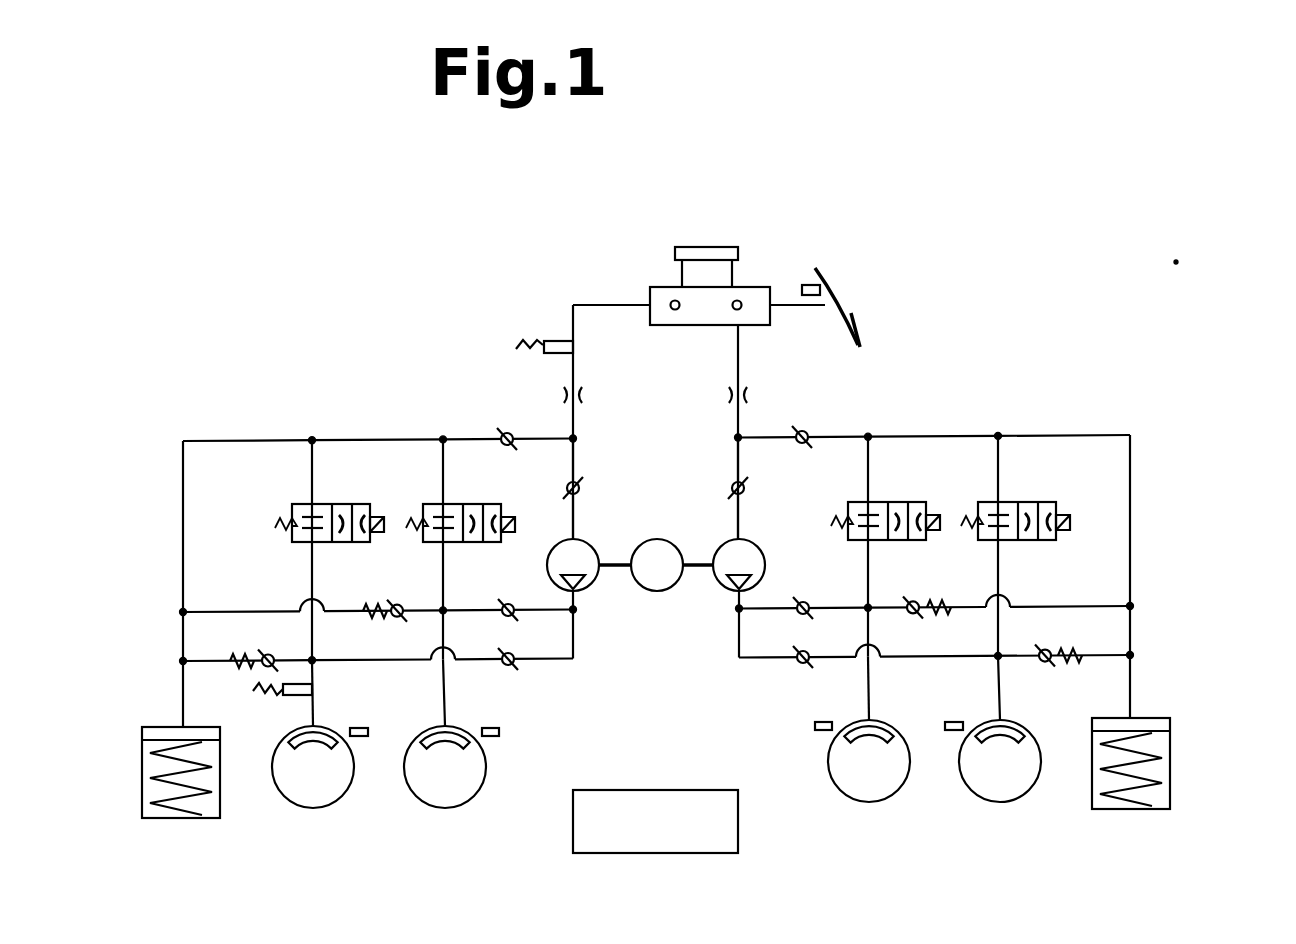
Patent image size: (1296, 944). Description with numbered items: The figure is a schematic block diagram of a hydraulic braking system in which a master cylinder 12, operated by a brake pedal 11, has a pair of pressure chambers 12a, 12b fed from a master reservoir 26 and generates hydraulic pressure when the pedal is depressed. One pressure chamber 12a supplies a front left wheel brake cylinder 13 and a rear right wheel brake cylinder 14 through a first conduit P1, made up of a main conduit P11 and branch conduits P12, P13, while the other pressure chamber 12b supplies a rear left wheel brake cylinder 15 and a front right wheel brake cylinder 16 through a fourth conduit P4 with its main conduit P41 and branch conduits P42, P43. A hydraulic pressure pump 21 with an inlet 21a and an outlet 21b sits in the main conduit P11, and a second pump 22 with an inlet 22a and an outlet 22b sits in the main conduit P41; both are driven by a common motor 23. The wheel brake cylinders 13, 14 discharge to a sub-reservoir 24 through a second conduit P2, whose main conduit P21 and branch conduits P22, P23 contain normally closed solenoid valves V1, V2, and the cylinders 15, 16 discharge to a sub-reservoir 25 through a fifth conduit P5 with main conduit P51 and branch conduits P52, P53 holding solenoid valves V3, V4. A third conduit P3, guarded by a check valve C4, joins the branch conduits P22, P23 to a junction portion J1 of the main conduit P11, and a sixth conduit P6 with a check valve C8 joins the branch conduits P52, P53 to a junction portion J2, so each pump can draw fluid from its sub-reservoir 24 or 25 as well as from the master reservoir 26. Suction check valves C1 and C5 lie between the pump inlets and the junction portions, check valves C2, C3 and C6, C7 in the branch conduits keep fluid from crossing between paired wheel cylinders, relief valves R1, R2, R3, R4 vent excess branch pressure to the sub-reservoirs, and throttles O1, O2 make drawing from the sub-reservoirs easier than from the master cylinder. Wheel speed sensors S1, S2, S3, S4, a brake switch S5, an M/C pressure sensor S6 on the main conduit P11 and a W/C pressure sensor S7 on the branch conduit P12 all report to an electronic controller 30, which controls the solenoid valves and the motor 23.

The brake pedal 11 is at (858, 320).
The master cylinder 12 is at (650, 288).
The pressure chamber 12a is at (673, 300).
The pressure chamber 12b is at (738, 300).
The front left wheel brake cylinder 13 is at (291, 745).
The rear right wheel brake cylinder 14 is at (407, 762).
The rear left wheel brake cylinder 15 is at (888, 735).
The front right wheel brake cylinder 16 is at (980, 760).
The hydraulic pressure pump 21 is at (553, 553).
The inlet of pump 21a is at (588, 547).
The pump outlet 21b is at (578, 592).
The hydraulic pressure pump 22 is at (718, 588).
The inlet of pump 22a is at (722, 548).
The outlet of pump 22b is at (734, 593).
The motor 23 is at (657, 592).
The sub-reservoir 24 is at (142, 758).
The sub-reservoir 25 is at (1170, 762).
The master reservoir 26 is at (723, 247).
The electronic controller 30 is at (618, 853).
The check valve C1 is at (582, 490).
The first check valve C2 is at (506, 670).
The second check valve C3 is at (506, 620).
The check valve C4 is at (503, 430).
The check valve C5 is at (746, 490).
The check valve C6 is at (806, 617).
The check valve C7 is at (806, 667).
The check valve C8 is at (812, 430).
The junction portion J1 is at (570, 437).
The junction portion J2 is at (737, 437).
The throttle O1 is at (562, 392).
The throttle O2 is at (728, 392).
The first conduit P1 is at (573, 362).
The second conduit P2 is at (312, 440).
The third conduit P3 is at (462, 438).
The fourth conduit P4 is at (738, 345).
The fifth conduit P5 is at (868, 436).
The sixth conduit P6 is at (772, 437).
The main conduit P11 is at (578, 462).
The branch conduit P12 is at (556, 661).
The branch conduit P13 is at (555, 592).
The main conduit P21 is at (220, 441).
The branch conduit P22 is at (312, 573).
The branch conduit P23 is at (442, 575).
The main conduit P41 is at (740, 455).
The branch conduit P42 is at (773, 598).
The branch conduit P43 is at (767, 659).
The main conduit P51 is at (1090, 435).
The branch conduit P52 is at (870, 565).
The branch conduit P53 is at (1000, 567).
The relief valve R1 is at (258, 650).
The relief valve R2 is at (388, 603).
The relief valve R3 is at (925, 613).
The relief valve R4 is at (1062, 665).
The wheel speed sensor S1 is at (363, 737).
The wheel speed sensor S2 is at (492, 738).
The wheel speed sensor S3 is at (821, 731).
The wheel speed sensor S4 is at (953, 731).
The brake switch S5 is at (802, 290).
The M/C pressure sensor S6 is at (550, 341).
The W/C pressure sensor S7 is at (287, 697).
The normally closed solenoid valve V1 is at (345, 503).
The normally closed solenoid valve V2 is at (470, 465).
The normally closed solenoid valve V3 is at (900, 500).
The normally closed solenoid valve V4 is at (1047, 462).